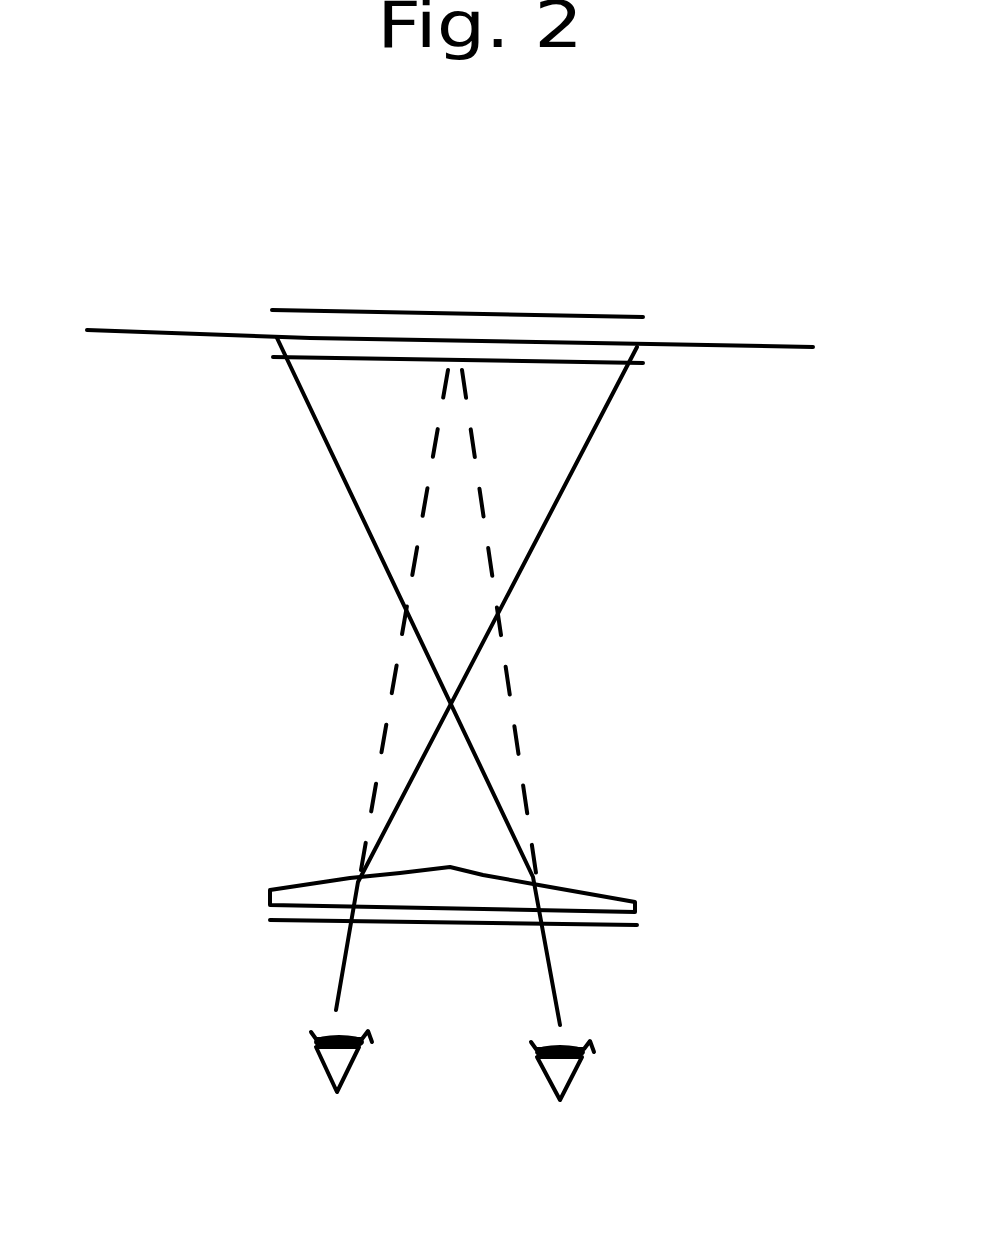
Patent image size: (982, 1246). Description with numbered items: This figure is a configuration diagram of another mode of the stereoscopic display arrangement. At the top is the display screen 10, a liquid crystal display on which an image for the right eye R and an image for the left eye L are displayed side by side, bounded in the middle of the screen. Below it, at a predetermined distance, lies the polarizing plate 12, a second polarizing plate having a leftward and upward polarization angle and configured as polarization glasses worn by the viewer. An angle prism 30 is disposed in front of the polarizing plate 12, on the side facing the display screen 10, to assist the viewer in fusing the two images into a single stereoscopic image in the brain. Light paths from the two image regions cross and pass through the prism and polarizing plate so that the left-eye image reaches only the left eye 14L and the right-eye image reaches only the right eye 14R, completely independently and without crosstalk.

The display screen 10 is at (727, 332).
The right-eye image R is at (523, 313).
The left-eye image L is at (377, 362).
The angle prism 30 is at (468, 887).
The polarizing plate 12 is at (297, 922).
The left eye 14L is at (341, 1105).
The right eye 14R is at (568, 1110).